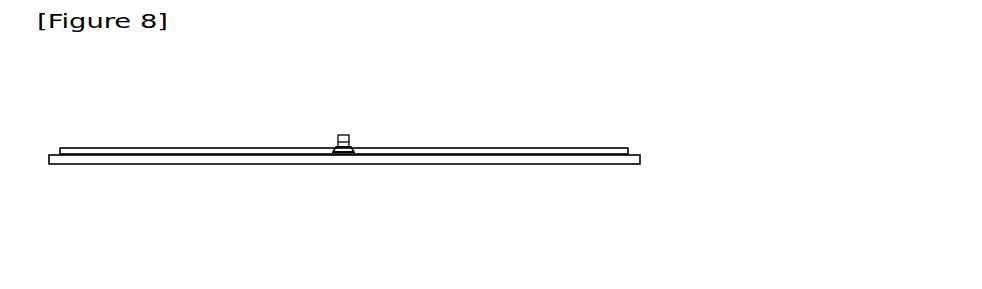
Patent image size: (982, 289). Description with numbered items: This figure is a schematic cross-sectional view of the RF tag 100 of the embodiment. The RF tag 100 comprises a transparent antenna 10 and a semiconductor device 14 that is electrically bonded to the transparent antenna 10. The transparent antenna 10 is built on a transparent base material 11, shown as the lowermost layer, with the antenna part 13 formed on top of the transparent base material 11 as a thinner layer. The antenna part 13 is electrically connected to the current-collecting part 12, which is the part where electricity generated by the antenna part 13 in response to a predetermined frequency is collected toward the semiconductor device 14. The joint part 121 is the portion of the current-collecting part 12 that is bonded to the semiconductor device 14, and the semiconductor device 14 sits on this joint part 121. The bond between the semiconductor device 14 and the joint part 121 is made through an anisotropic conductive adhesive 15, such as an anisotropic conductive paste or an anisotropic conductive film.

The RF tag 100 is at (757, 86).
The transparent antenna 10 is at (660, 165).
The transparent base material 11 is at (143, 168).
The antenna part 13 is at (165, 148).
The semiconductor device 14 is at (347, 135).
The joint part 121 is at (343, 157).
The current-collecting part 12 is at (468, 189).
The anisotropic conductive adhesive 15 is at (337, 148).